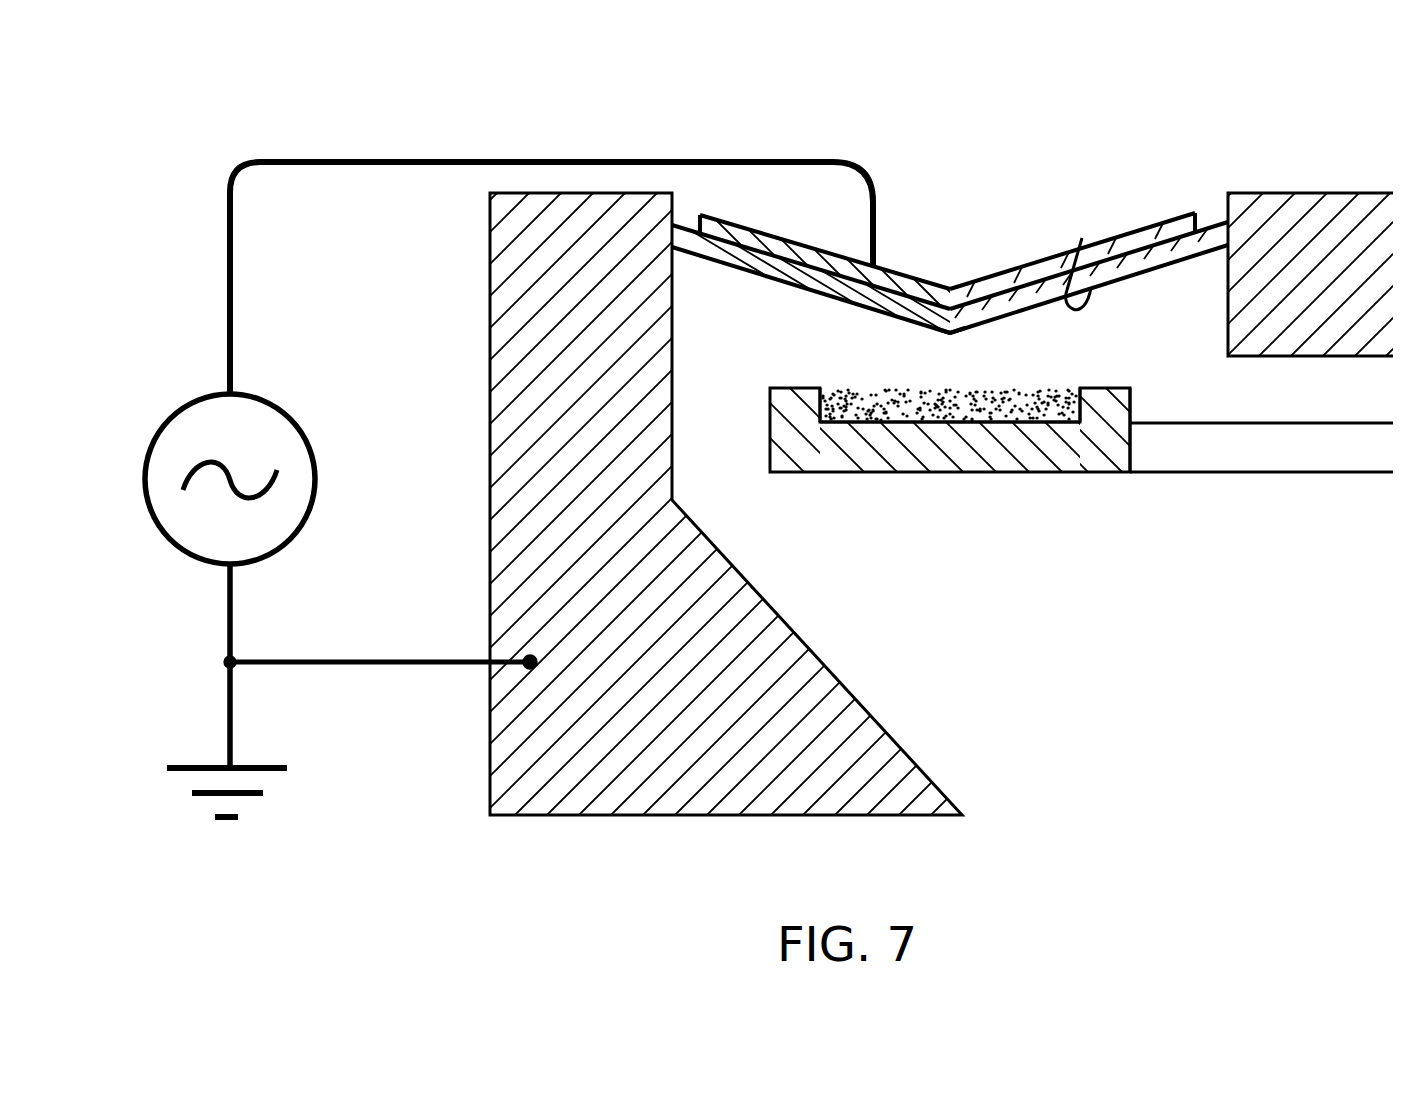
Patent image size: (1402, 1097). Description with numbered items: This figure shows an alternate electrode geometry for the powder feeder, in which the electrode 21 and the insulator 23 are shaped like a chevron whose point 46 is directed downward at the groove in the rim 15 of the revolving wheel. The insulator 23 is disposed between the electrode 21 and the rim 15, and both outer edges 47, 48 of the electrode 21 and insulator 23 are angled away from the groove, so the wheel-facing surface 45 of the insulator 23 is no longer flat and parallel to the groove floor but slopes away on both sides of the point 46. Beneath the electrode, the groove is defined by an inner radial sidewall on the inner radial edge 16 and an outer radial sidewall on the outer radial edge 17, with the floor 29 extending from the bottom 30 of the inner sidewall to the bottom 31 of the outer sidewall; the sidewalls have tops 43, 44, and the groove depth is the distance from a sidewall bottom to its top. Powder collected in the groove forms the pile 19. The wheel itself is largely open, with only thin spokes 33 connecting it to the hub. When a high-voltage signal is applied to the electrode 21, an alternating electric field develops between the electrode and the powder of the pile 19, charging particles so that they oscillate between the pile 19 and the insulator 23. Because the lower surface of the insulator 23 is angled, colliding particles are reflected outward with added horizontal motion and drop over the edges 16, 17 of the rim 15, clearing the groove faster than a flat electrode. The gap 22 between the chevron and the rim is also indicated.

The rim 15 is at (803, 450).
The inner radial edge 16 is at (1132, 390).
The outer radial edge 17 is at (770, 388).
The pile 19 is at (1028, 407).
The electrode 21 is at (1045, 258).
The gap 22 is at (1100, 348).
The insulator 23 is at (915, 307).
The floor 29 is at (973, 425).
The bottom of inner radial sidewall 30 is at (1080, 427).
The bottom of outer radial sidewall 31 is at (820, 425).
The spokes 33 is at (1327, 450).
The top of inner radial sidewall 43 is at (1073, 410).
The top of outer radial sidewall 44 is at (828, 428).
The wheel-facing surface 45 is at (1091, 288).
The point 46 is at (950, 290).
The outer edge of electrode 47 is at (720, 235).
The outer edge of insulator 48 is at (1192, 218).